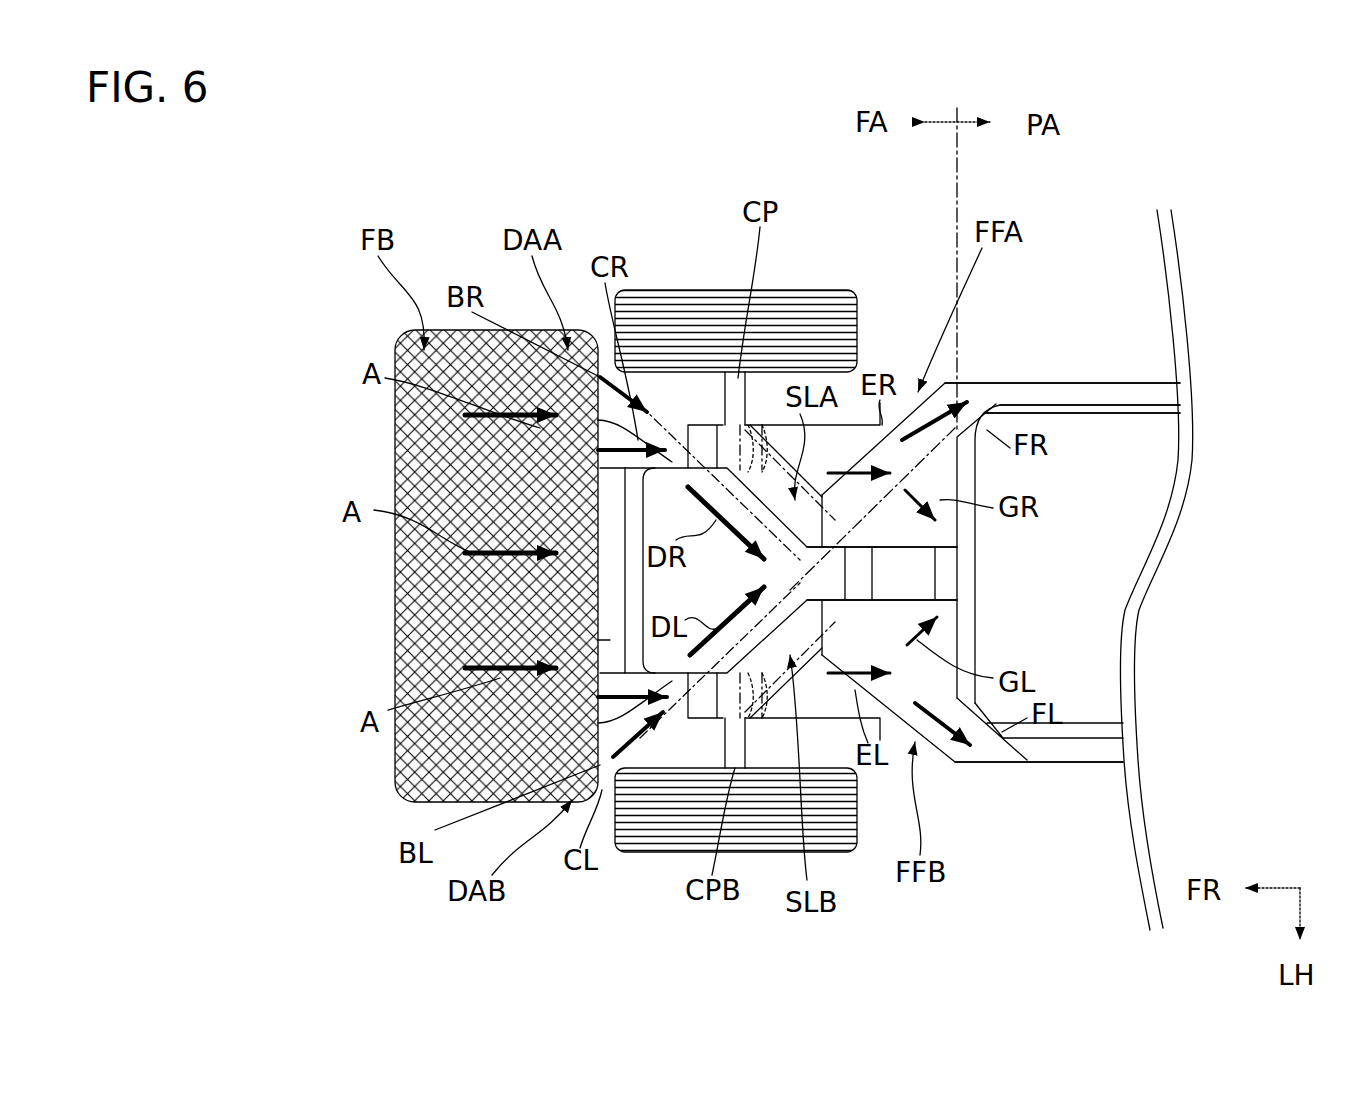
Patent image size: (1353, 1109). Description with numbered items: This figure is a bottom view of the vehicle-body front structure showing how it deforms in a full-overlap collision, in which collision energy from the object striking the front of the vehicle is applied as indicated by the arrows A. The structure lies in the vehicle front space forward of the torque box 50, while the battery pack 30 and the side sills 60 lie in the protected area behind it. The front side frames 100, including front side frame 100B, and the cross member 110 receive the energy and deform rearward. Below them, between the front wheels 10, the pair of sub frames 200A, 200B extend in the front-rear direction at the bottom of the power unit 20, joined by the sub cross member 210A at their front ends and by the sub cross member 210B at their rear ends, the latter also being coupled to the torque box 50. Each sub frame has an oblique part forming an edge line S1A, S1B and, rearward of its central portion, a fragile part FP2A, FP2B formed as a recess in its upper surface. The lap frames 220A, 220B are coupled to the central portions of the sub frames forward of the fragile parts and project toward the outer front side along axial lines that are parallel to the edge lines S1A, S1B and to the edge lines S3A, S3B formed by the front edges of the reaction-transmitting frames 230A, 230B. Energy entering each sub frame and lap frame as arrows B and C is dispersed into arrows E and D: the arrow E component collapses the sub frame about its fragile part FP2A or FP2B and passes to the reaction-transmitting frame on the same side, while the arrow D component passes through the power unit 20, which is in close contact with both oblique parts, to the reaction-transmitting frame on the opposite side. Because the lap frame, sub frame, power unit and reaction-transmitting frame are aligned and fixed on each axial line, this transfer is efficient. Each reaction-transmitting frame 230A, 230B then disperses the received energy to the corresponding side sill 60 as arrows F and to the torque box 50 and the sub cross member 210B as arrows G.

The front wheels 10 is at (690, 330).
The power unit 20 is at (683, 583).
The battery pack 30 is at (1114, 547).
The torque box 50 is at (950, 622).
The side sills 60 is at (1073, 385).
The front side frames 100 is at (600, 455).
The front side frame 100B is at (605, 697).
The cross member 110 is at (600, 530).
The sub frame 200A is at (845, 455).
The sub frame 200B is at (820, 705).
The sub cross member 210A is at (600, 642).
The sub cross member 210B is at (905, 592).
The lap frame 220A is at (712, 395).
The lap frame 220B is at (672, 725).
The reaction-transmitting frame 230A is at (935, 470).
The reaction-transmitting frame 230B is at (985, 750).
The fragile part FP2A is at (766, 392).
The fragile part FP2B is at (772, 752).
The edge line S1A is at (845, 563).
The edge line S1B is at (840, 582).
The edge line S3A is at (995, 332).
The edge line S3B is at (990, 800).